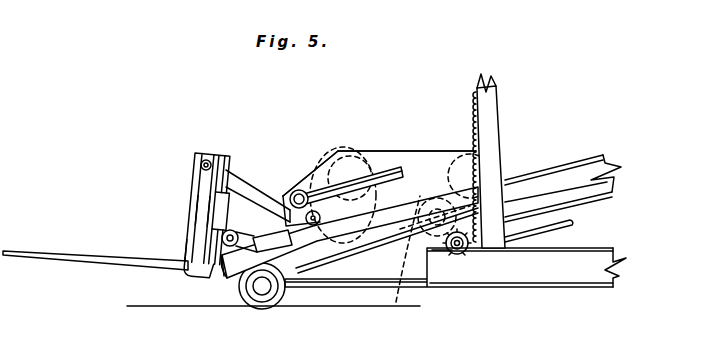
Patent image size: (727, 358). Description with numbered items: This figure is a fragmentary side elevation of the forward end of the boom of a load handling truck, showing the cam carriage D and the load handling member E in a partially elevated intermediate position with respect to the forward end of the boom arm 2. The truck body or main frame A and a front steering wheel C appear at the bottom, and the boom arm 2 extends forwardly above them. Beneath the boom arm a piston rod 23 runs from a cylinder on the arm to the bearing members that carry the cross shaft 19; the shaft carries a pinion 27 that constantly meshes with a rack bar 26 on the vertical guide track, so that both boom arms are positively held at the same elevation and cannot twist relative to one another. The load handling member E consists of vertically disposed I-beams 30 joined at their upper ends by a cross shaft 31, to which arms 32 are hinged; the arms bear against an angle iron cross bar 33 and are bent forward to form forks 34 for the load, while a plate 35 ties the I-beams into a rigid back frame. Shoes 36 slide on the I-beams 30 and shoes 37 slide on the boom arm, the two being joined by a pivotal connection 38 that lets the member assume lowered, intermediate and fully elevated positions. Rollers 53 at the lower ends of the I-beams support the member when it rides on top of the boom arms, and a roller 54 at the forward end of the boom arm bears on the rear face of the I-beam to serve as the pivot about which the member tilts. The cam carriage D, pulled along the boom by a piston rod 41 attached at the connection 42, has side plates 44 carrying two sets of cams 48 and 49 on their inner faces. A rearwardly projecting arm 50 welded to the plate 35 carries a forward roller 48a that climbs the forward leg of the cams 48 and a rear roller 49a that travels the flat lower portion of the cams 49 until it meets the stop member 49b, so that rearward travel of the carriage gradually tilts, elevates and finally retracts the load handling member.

The boom arm 2 is at (552, 174).
The cross shaft 19 is at (460, 254).
The piston rod 23 is at (572, 224).
The rack bar 26 is at (477, 102).
The pinion 27 is at (444, 254).
The I-beam 30 is at (207, 182).
The cross shaft 31 is at (212, 152).
The arm 32 is at (191, 210).
The angle iron cross bar 33 is at (188, 232).
The fork 34 is at (72, 246).
The plate 35 is at (190, 252).
The shoe 36 is at (235, 190).
The shoe 37 is at (273, 248).
The pivotal connection 38 is at (238, 232).
The piston rod 41 is at (386, 166).
The piston rod connection 42 is at (299, 190).
The side plate 44 is at (418, 151).
The cam 48 is at (330, 138).
The forward roller 48a is at (340, 152).
The cam 49 is at (466, 170).
The rear roller 49a is at (398, 304).
The stop member 49b is at (402, 248).
The arm 50 is at (271, 208).
The roller 53 is at (198, 273).
The roller 54 is at (222, 270).
The main frame A is at (527, 288).
The front steering wheel C is at (250, 300).
The cam carriage D is at (352, 148).
The load handling member E is at (185, 208).